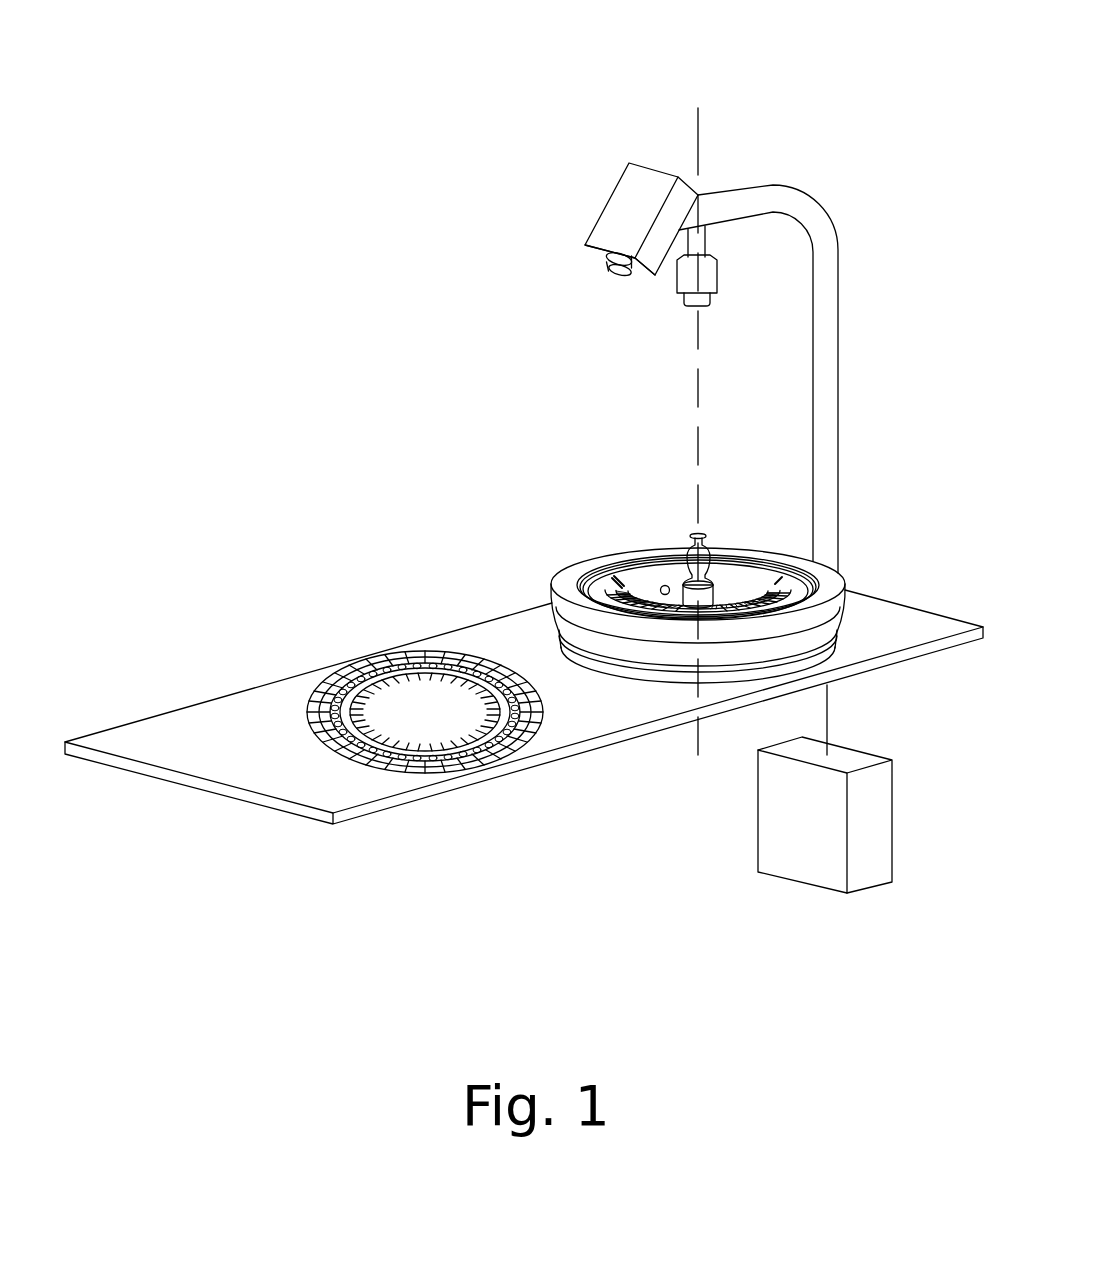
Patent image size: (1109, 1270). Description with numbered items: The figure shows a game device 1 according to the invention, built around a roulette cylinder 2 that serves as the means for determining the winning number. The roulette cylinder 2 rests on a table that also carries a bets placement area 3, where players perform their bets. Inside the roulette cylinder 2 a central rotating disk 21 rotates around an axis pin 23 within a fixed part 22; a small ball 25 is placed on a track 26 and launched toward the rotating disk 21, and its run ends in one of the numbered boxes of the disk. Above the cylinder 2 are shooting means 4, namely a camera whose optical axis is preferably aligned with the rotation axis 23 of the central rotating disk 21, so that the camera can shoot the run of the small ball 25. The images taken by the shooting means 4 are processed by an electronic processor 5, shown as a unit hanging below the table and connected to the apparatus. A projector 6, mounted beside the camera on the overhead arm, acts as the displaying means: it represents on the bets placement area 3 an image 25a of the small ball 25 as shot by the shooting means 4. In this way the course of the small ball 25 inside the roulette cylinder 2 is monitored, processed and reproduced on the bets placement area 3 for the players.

The game device 1 is at (187, 333).
The roulette cylinder 2 is at (857, 583).
The bets placement area 3 is at (400, 625).
The shooting means 4 is at (678, 315).
The electronic processor 5 is at (800, 905).
The projector 6 is at (583, 178).
The central rotating disk 21 is at (726, 604).
The fixed part 22 is at (643, 655).
The axis pin 23 is at (697, 130).
The small ball 25 is at (620, 583).
The image of the small ball 25a is at (330, 674).
The track 26 is at (742, 556).